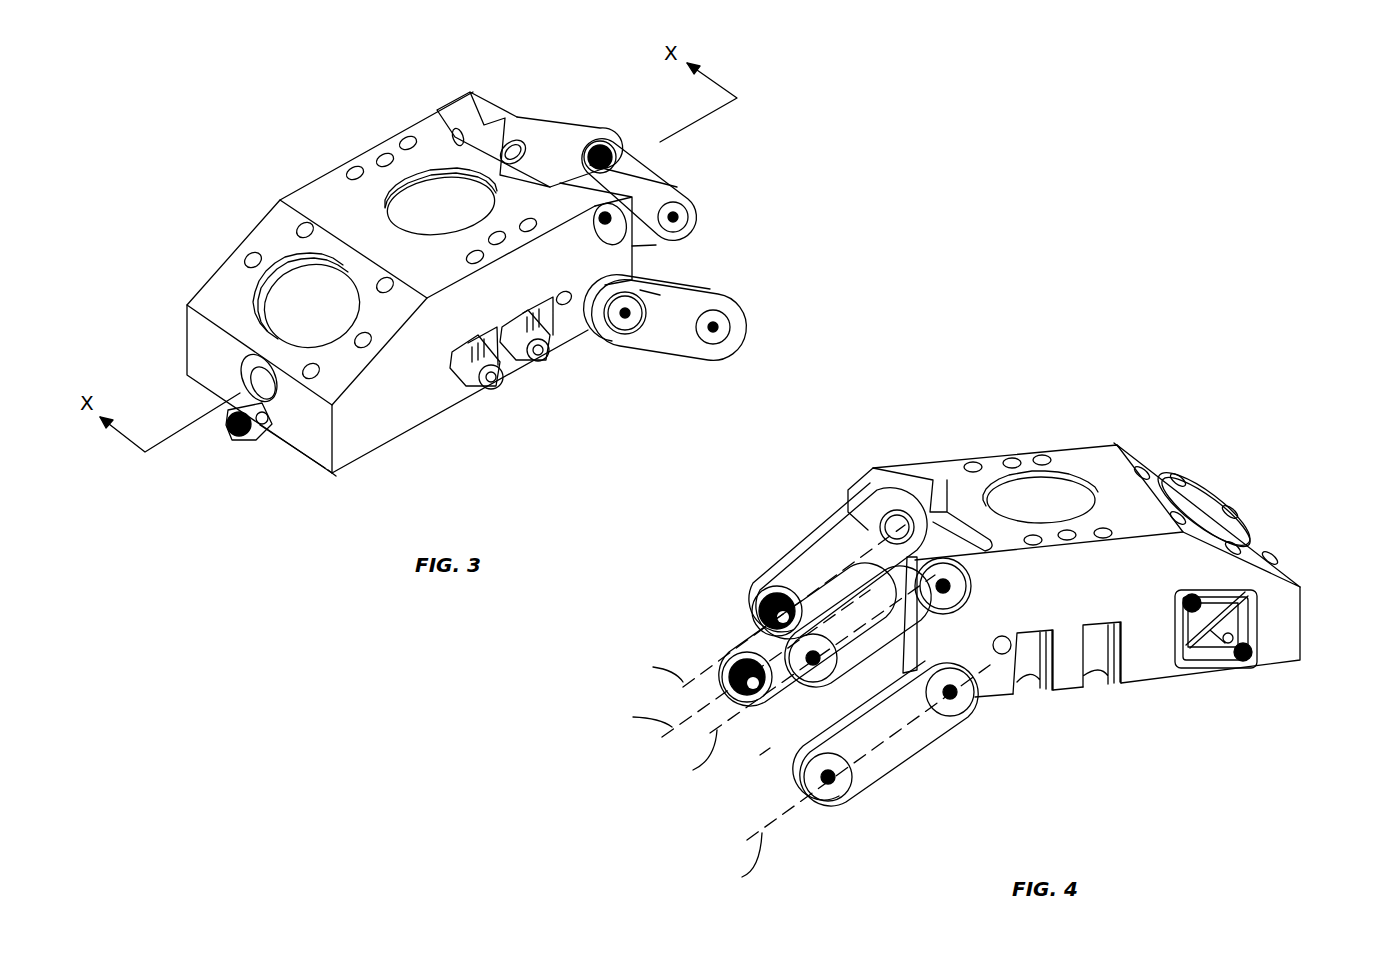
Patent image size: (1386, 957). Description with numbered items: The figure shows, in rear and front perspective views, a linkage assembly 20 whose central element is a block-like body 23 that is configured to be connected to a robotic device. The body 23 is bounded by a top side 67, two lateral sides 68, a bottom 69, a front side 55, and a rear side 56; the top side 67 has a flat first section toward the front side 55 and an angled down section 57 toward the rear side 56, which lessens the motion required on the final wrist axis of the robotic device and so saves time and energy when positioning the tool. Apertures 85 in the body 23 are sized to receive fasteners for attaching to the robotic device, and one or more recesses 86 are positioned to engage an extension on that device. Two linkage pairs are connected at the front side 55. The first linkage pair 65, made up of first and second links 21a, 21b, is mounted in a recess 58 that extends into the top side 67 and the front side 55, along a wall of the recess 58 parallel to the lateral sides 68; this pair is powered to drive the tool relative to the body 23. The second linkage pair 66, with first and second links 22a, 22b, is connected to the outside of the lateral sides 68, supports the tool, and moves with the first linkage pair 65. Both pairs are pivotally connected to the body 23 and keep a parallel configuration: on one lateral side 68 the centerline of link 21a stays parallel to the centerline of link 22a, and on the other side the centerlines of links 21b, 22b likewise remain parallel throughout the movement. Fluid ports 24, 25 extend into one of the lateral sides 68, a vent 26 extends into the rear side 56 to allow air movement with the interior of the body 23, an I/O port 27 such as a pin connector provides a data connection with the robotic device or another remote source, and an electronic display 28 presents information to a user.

In FIG. 3, the linkage assembly 20 is at (517, 73).
In FIG. 4, the linkage assembly 20 is at (1142, 372).
In FIG. 3, the first link 21a is at (555, 120).
In FIG. 4, the first link 21a is at (805, 693).
In FIG. 3, the second link 21b is at (657, 180).
In FIG. 4, the second link 21b is at (813, 537).
In FIG. 4, the first link 22a is at (820, 807).
In FIG. 3, the second link 22b is at (697, 283).
In FIG. 4, the second link 22b is at (713, 688).
In FIG. 3, the body 23 is at (343, 468).
In FIG. 4, the body 23 is at (1105, 445).
In FIG. 3, the fluid port 24 is at (472, 367).
In FIG. 3, the fluid port 25 is at (517, 338).
In FIG. 3, the vent 26 is at (263, 375).
In FIG. 3, the I/O port 27 is at (253, 423).
In FIG. 4, the electronic display 28 is at (1207, 630).
In FIG. 3, the front side 55 is at (633, 253).
In FIG. 4, the front side 55 is at (905, 648).
In FIG. 3, the rear side 56 is at (205, 357).
In FIG. 4, the rear side 56 is at (1302, 608).
In FIG. 3, the angled down section 57 is at (265, 290).
In FIG. 3, the recess 58 is at (456, 128).
In FIG. 4, the recess 58 is at (910, 467).
In FIG. 3, the first linkage pair 65 is at (627, 130).
In FIG. 4, the first linkage pair 65 is at (750, 565).
In FIG. 3, the second linkage pair 66 is at (718, 243).
In FIG. 4, the second linkage pair 66 is at (750, 760).
In FIG. 3, the top side 67 is at (345, 200).
In FIG. 4, the top side 67 is at (970, 485).
In FIG. 3, the lateral sides 68 is at (262, 220).
In FIG. 4, the lateral sides 68 is at (1273, 647).
In FIG. 3, the bottom 69 is at (313, 467).
In FIG. 3, the apertures 85 is at (385, 158).
In FIG. 4, the apertures 85 is at (1042, 458).
In FIG. 3, the recesses 86 is at (430, 195).
In FIG. 4, the recesses 86 is at (1053, 513).